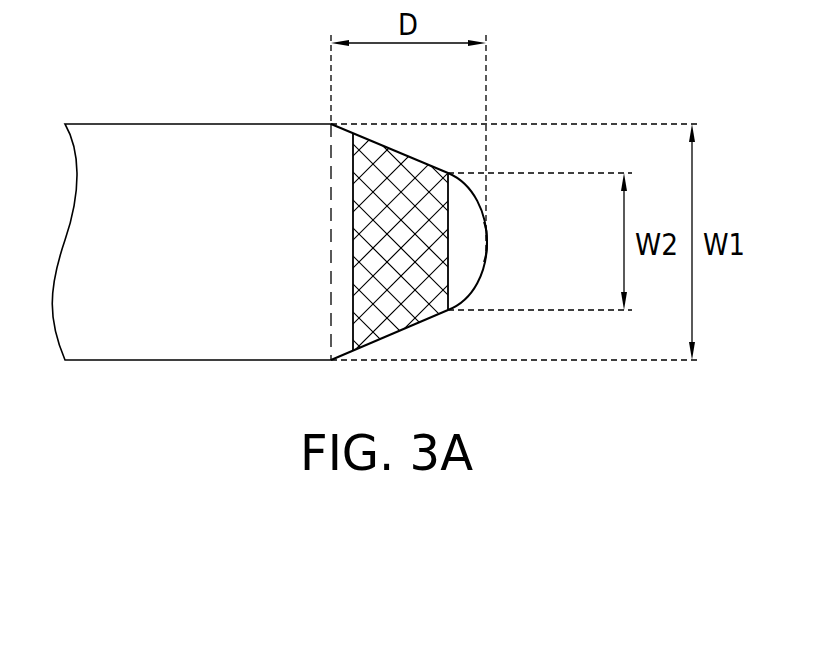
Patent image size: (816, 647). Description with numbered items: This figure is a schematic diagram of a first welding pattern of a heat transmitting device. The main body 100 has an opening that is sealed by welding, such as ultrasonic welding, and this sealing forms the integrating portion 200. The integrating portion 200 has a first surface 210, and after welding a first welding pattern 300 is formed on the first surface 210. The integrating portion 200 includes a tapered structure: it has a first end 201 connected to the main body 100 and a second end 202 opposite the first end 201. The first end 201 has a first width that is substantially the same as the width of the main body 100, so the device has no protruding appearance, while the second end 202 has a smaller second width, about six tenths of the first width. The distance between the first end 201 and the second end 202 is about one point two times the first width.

The main body 100 is at (198, 124).
The integrating portion 200 is at (470, 188).
The first end 201 is at (322, 290).
The second end 202 is at (498, 243).
The first surface 210 is at (340, 126).
The first welding pattern 300 is at (410, 327).